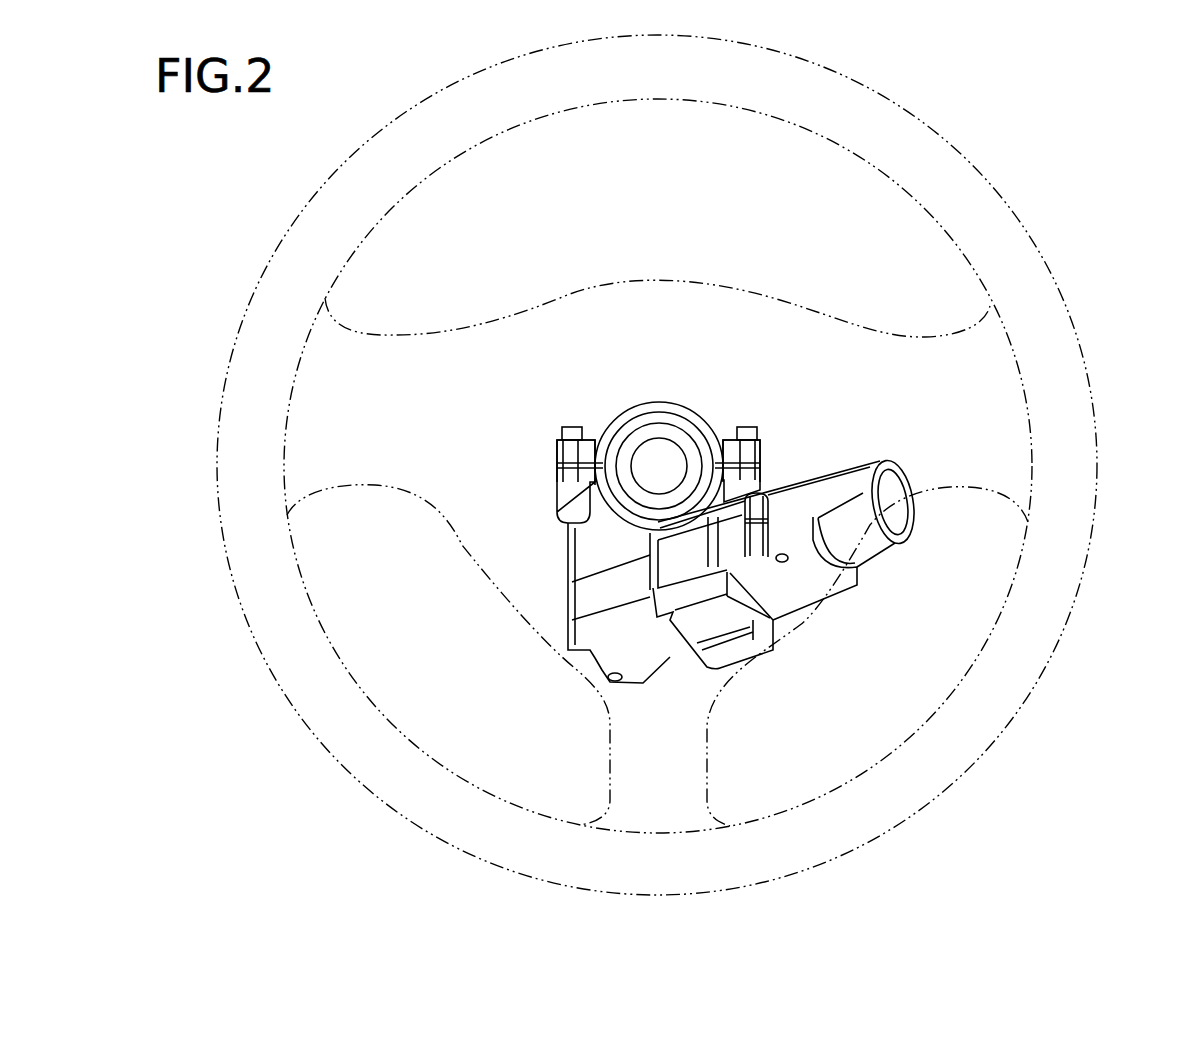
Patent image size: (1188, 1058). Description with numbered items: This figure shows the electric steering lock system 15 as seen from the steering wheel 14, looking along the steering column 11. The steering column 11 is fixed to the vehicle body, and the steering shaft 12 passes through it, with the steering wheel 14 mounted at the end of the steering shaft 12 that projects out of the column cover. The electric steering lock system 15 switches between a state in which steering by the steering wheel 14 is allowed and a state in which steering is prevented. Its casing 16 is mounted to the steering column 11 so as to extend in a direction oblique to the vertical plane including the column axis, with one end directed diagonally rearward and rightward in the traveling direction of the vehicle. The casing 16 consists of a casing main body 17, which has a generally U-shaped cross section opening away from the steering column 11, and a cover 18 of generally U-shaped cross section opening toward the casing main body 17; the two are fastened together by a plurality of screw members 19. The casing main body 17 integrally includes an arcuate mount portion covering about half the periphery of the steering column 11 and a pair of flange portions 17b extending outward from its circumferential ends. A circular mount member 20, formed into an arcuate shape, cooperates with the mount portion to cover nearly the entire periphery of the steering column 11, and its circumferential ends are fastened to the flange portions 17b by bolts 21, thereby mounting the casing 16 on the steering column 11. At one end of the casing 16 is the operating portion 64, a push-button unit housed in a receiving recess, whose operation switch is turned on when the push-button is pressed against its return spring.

The steering column 11 is at (677, 420).
The steering shaft 12 is at (638, 437).
The steering wheel 14 is at (1072, 503).
The electric steering lock system 15 is at (835, 605).
The casing 16 is at (427, 600).
The casing main body 17 is at (595, 560).
The flange portions 17b is at (558, 475).
The cover 18 is at (593, 600).
The screw members 19 is at (767, 490).
The circular mount member 20 is at (657, 401).
The bolts 21 is at (568, 427).
The operating portion 64 is at (900, 494).